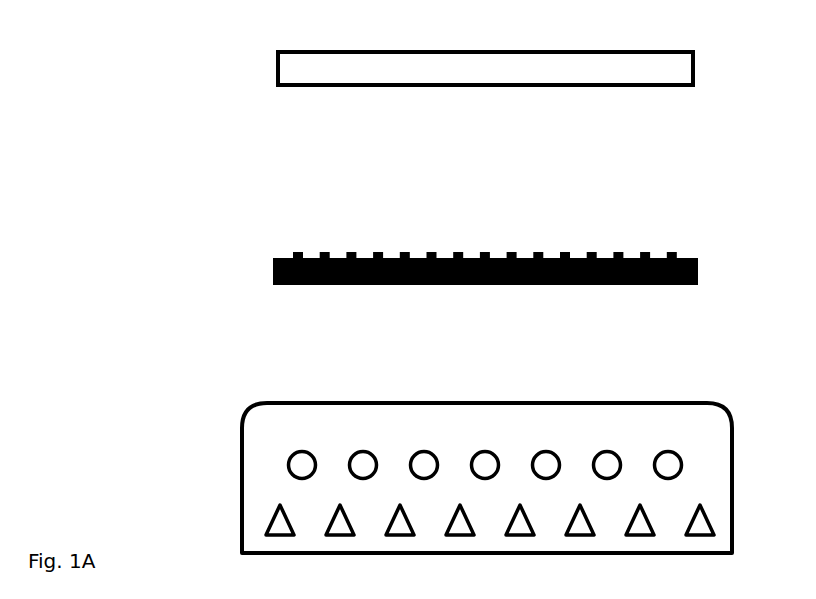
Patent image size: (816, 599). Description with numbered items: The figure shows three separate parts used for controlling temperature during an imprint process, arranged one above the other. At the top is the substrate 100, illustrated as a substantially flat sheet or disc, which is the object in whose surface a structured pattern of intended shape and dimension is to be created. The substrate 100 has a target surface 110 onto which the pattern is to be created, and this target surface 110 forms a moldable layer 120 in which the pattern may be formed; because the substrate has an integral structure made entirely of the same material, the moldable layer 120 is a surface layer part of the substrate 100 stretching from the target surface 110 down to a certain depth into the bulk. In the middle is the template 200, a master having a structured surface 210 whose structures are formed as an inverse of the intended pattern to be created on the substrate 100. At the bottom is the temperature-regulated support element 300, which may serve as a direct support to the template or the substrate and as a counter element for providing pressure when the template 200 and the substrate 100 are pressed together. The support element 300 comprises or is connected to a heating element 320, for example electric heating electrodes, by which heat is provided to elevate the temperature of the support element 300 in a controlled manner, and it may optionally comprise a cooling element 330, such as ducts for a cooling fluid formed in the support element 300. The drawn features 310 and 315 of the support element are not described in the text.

The substrate 100 is at (460, 76).
The target surface 110 is at (675, 88).
The moldable layer 120 is at (433, 73).
The template 200 is at (424, 235).
The structured surface 210 is at (602, 252).
The temperature-regulated support element 300 is at (436, 458).
The housing side wall 310 is at (240, 490).
The housing top surface 315 is at (318, 402).
The heating element 320 is at (708, 517).
The cooling element 330 is at (672, 450).